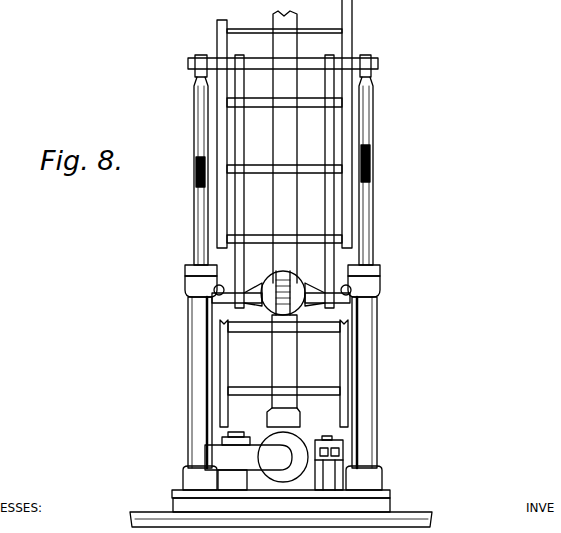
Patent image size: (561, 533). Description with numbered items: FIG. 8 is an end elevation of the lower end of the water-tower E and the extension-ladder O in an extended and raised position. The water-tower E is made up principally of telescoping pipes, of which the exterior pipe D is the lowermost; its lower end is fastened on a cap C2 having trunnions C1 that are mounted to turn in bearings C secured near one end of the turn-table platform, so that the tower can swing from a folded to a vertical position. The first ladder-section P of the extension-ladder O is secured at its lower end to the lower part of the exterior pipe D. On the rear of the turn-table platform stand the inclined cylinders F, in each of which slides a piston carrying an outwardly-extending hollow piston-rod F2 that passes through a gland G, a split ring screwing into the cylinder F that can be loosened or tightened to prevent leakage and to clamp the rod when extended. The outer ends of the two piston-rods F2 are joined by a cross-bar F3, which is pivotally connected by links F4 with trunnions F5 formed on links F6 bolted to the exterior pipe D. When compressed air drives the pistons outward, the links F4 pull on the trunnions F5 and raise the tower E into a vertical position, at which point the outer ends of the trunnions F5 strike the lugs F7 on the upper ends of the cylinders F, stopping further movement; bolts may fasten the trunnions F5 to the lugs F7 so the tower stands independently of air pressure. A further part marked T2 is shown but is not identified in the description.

The extension-ladder O is at (284, 124).
The water-tower E is at (292, 16).
The cross-bar F3 is at (190, 63).
The hollow piston-rod F2 is at (380, 212).
The links F4 is at (284, 181).
The gland G is at (185, 272).
The cylinders F is at (207, 405).
The lugs F7 is at (392, 303).
The trunnions F5 is at (264, 292).
The links F6 is at (273, 316).
The exterior pipe D is at (290, 369).
The first ladder-section P is at (343, 364).
The cap C2 is at (298, 432).
The horizontal cylinder T2 is at (250, 463).
The bearings C is at (234, 437).
The trunnions C1 is at (330, 441).